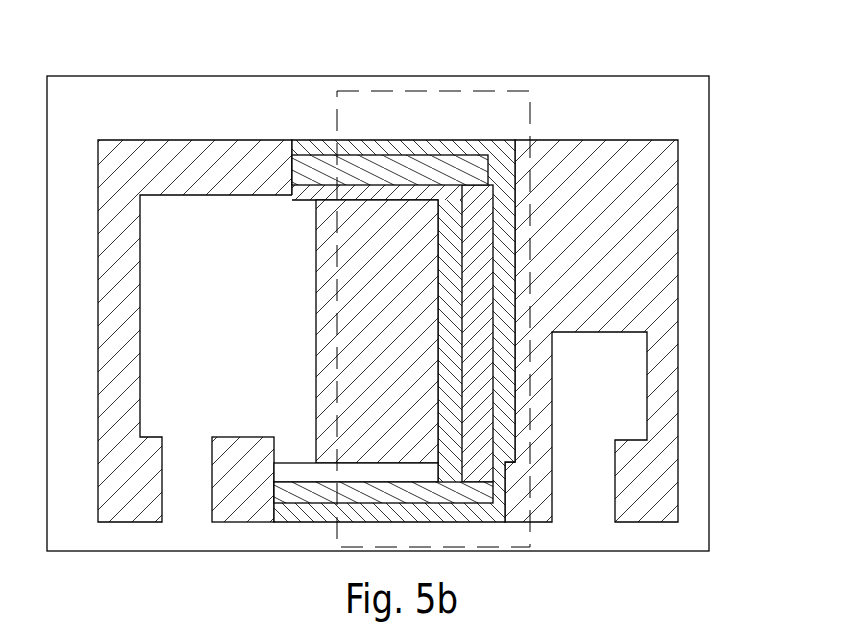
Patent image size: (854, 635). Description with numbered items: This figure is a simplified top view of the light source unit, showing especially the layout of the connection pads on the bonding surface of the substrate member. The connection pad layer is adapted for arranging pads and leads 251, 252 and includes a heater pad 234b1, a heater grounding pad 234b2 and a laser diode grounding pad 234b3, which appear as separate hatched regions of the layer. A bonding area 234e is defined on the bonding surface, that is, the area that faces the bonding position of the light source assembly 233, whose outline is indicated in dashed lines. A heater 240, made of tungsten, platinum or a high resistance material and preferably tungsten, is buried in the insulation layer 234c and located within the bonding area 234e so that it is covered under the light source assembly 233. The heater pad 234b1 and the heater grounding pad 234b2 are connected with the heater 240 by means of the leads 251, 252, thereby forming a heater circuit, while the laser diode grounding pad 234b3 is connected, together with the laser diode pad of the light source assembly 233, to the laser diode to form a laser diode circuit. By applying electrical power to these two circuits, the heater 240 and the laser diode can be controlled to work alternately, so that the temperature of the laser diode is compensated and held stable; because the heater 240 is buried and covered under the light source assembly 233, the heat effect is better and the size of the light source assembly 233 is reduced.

The light source assembly 233 is at (530, 91).
The heater pad 234b1 is at (247, 490).
The heater grounding pad 234b2 is at (132, 492).
The laser diode grounding pad 234b3 is at (658, 508).
The insulation layer 234c is at (448, 418).
The bonding area 234e is at (384, 336).
The heater 240 is at (477, 278).
The lead 251 is at (315, 168).
The lead 252 is at (314, 493).